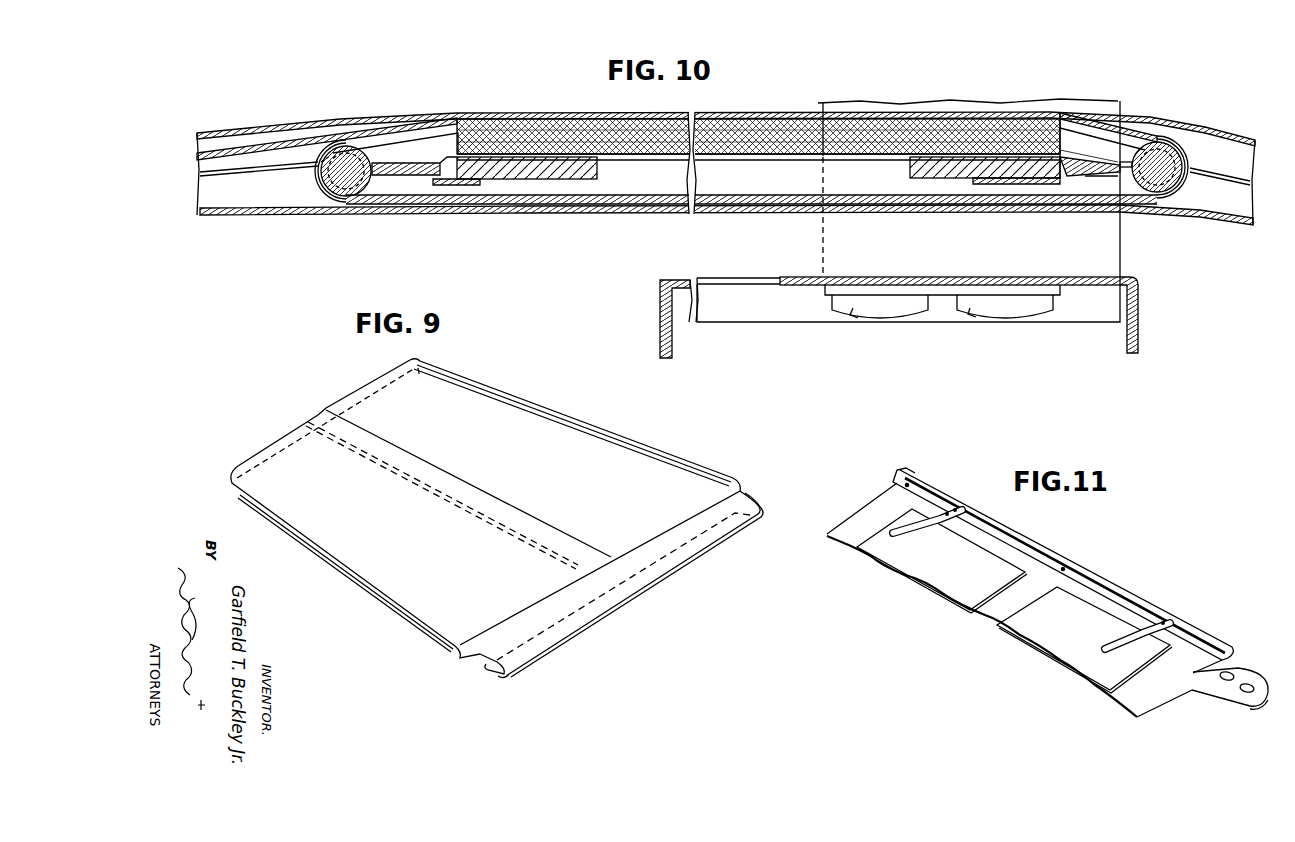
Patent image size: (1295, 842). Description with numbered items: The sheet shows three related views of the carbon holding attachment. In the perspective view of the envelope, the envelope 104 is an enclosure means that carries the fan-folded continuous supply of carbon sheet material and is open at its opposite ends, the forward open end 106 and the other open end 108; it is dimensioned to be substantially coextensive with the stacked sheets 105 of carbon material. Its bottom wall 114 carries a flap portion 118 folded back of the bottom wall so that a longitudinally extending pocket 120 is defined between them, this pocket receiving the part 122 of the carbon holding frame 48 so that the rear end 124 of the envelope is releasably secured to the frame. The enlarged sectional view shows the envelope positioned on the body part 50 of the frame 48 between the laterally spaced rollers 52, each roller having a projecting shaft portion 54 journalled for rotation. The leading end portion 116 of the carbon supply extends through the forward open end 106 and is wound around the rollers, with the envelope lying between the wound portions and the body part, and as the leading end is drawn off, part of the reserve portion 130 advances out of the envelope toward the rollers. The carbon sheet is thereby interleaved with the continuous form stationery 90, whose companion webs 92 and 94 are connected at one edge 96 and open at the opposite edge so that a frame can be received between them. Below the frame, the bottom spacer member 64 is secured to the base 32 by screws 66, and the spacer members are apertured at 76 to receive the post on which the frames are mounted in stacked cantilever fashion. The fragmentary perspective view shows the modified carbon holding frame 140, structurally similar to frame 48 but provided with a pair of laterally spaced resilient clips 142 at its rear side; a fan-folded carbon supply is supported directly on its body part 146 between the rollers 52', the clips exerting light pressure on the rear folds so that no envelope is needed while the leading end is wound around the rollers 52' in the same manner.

In FIG. 10, the base 32 is at (805, 277).
In FIG. 10, the carbon holding frame 48 is at (629, 183).
In FIG. 10, the body part 50 is at (741, 172).
In FIG. 10, the rollers 52 is at (765, 168).
In FIG. 11, the rollers 52' is at (1063, 564).
In FIG. 10, the projecting shaft portion 54 is at (340, 178).
In FIG. 10, the bottom spacer member 64 is at (1110, 248).
In FIG. 10, the screws 66 is at (962, 310).
In FIG. 10, the apertures 76 is at (1110, 104).
In FIG. 10, the continuous form stationery 90 is at (347, 118).
In FIG. 10, the web 92 is at (392, 108).
In FIG. 10, the web 94 is at (380, 213).
In FIG. 10, the connected edge 96 is at (217, 173).
In FIG. 10, the envelope 104 is at (725, 118).
In FIG. 9, the envelope 104 is at (555, 441).
In FIG. 10, the stacked sheets 105 is at (933, 128).
In FIG. 10, the forward open end 106 is at (457, 144).
In FIG. 9, the forward open end 106 is at (270, 454).
In FIG. 9, the open end 108 is at (465, 652).
In FIG. 10, the bottom wall 114 is at (812, 154).
In FIG. 9, the bottom wall 114 is at (356, 410).
In FIG. 10, the leading end portion 116 is at (434, 125).
In FIG. 10, the flap portion 118 is at (1098, 174).
In FIG. 9, the flap portion 118 is at (492, 669).
In FIG. 10, the pocket 120 is at (1080, 156).
In FIG. 9, the pocket 120 is at (504, 680).
In FIG. 10, the part of the frame 122 is at (420, 174).
In FIG. 9, the rear end 124 is at (637, 595).
In FIG. 10, the reserve portion 130 is at (759, 137).
In FIG. 11, the carbon holding frame 140 is at (1108, 568).
In FIG. 11, the resilient clips 142 is at (912, 532).
In FIG. 11, the body part 146 is at (1167, 688).